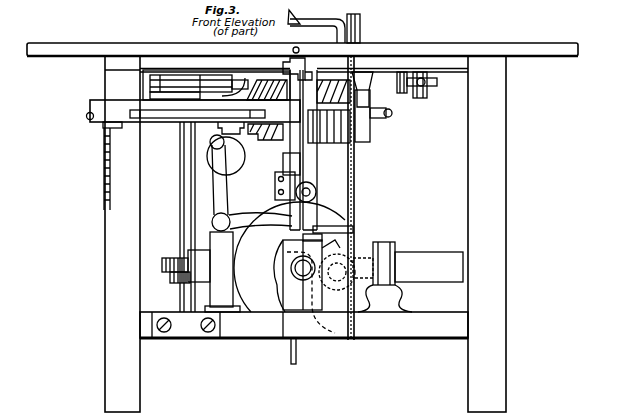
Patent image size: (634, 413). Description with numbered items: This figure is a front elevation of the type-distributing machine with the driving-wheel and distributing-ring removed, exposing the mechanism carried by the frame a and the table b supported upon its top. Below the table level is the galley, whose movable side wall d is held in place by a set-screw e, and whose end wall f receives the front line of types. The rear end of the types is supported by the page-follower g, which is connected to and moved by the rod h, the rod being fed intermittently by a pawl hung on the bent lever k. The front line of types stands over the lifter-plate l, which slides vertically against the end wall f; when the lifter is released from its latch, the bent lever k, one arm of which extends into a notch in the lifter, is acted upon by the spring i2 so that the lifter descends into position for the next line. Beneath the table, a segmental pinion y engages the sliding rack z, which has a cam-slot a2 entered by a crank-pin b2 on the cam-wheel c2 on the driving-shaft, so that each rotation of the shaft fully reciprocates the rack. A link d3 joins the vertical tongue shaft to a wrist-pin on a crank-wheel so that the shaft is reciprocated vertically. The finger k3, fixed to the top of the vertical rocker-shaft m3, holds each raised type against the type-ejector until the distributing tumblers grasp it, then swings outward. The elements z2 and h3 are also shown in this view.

The table b is at (302, 49).
The frame a is at (305, 234).
The finger k3 is at (324, 24).
The gear cylinder z2 is at (186, 85).
The side wall of the galley d is at (194, 155).
The page-follower g is at (258, 141).
The sliding rack z is at (321, 217).
The segmental pinion y is at (170, 270).
The spring i2 is at (226, 156).
The bent lever k is at (379, 119).
The cam-wheel c2 is at (289, 257).
The rod h is at (312, 150).
The lifter-plate l is at (333, 91).
The set-screw e is at (294, 69).
The end wall f is at (307, 80).
The vertical rocker-shaft m3 is at (355, 190).
The link d3 is at (309, 283).
The bracket h3 is at (333, 223).
The crank-pin b2 is at (337, 271).
The cam-slot a2 is at (333, 243).